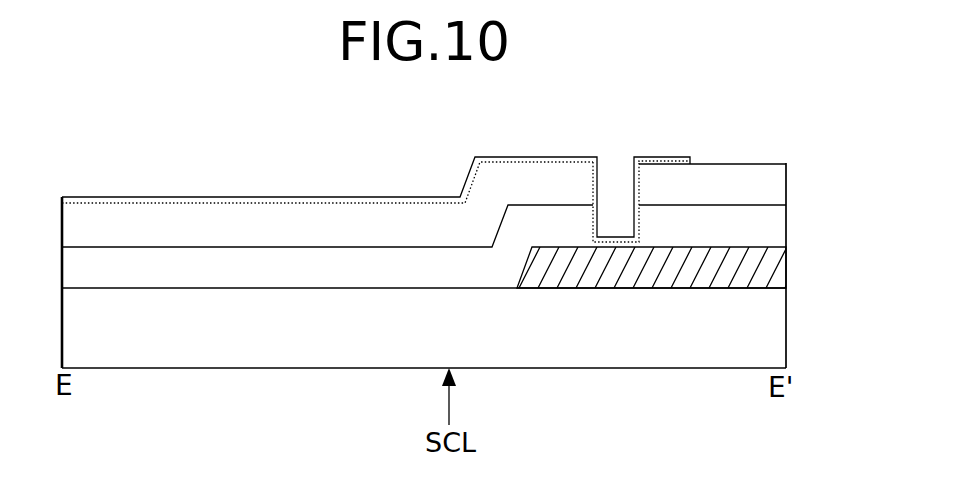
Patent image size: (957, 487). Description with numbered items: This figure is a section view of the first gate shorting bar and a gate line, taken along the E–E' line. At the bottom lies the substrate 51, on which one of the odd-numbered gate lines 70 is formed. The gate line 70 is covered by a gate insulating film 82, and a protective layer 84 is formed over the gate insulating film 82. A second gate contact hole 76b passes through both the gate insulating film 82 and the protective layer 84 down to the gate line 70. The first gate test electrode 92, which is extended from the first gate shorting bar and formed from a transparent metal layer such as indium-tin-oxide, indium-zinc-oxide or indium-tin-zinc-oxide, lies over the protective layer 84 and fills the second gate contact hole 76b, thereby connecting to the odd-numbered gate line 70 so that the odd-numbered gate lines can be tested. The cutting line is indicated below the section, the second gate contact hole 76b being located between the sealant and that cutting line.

The substrate 51 is at (787, 336).
The odd-numbered gate lines 70 is at (787, 263).
The gate insulating film 82 is at (787, 228).
The protective layer 84 is at (787, 185).
The second gate contact hole 76b is at (613, 170).
The first gate test electrode 92 is at (674, 156).